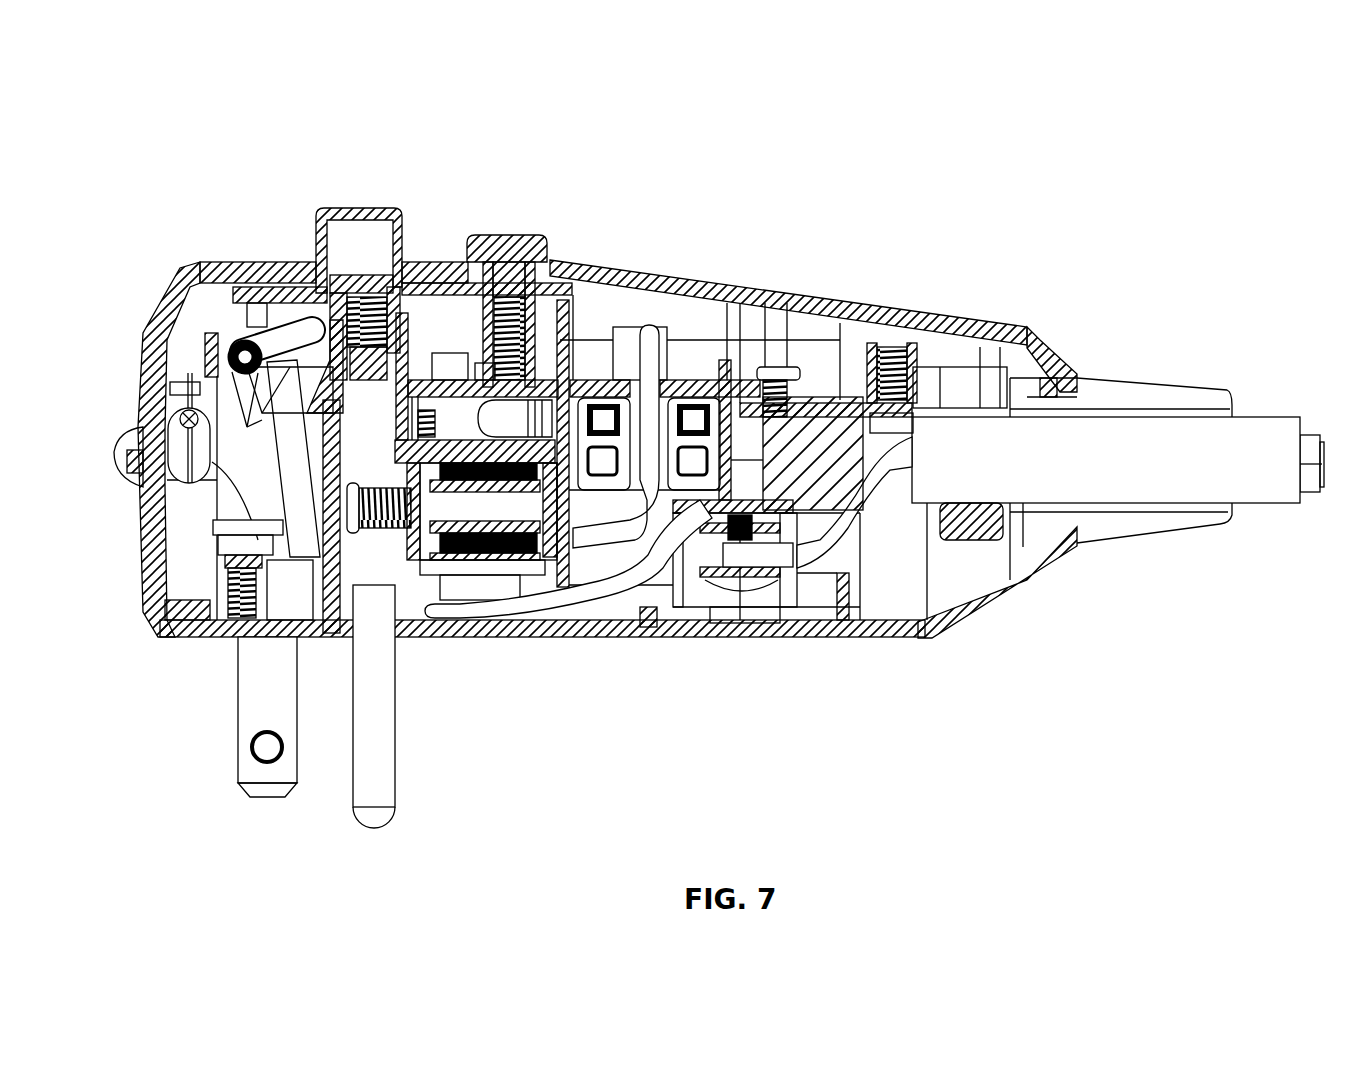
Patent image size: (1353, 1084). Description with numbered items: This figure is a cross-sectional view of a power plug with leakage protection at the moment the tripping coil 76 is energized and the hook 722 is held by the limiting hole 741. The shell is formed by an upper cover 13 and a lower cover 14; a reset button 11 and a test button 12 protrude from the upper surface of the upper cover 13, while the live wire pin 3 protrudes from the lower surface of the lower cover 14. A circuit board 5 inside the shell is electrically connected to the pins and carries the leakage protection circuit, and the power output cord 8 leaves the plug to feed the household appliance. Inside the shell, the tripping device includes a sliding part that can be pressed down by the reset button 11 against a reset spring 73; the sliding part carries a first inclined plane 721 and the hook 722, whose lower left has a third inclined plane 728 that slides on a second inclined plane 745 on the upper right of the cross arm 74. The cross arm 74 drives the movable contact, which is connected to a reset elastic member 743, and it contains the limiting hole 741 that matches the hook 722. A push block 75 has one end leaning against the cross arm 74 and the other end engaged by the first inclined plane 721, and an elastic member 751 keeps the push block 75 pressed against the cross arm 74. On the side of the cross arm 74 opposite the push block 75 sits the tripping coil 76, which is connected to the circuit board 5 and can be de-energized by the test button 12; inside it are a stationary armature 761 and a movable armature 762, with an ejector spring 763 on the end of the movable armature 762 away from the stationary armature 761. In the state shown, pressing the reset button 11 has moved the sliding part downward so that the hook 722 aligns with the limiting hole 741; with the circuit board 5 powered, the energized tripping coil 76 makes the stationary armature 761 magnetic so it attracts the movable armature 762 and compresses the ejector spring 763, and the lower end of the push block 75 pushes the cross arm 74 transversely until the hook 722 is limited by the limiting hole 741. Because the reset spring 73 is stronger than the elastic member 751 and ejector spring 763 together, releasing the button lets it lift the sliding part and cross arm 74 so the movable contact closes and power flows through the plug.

The live wire pin 3 is at (263, 682).
The circuit board 5 is at (707, 372).
The power output cord 8 is at (940, 470).
The reset button 11 is at (316, 208).
The test button 12 is at (483, 236).
The upper cover 13 is at (668, 272).
The lower cover 14 is at (432, 563).
The reset spring 73 is at (307, 258).
The cross arm 74 is at (353, 640).
The push block 75 is at (262, 337).
The tripping coil 76 is at (505, 462).
The first inclined plane 721 is at (285, 320).
The hook 722 is at (390, 405).
The third inclined plane 728 is at (280, 562).
The limiting hole 741 is at (240, 565).
The reset elastic member 743 is at (410, 590).
The second inclined plane 745 is at (364, 300).
The elastic member 751 is at (215, 322).
The stationary armature 761 is at (528, 513).
The movable armature 762 is at (448, 507).
The ejector spring 763 is at (430, 600).